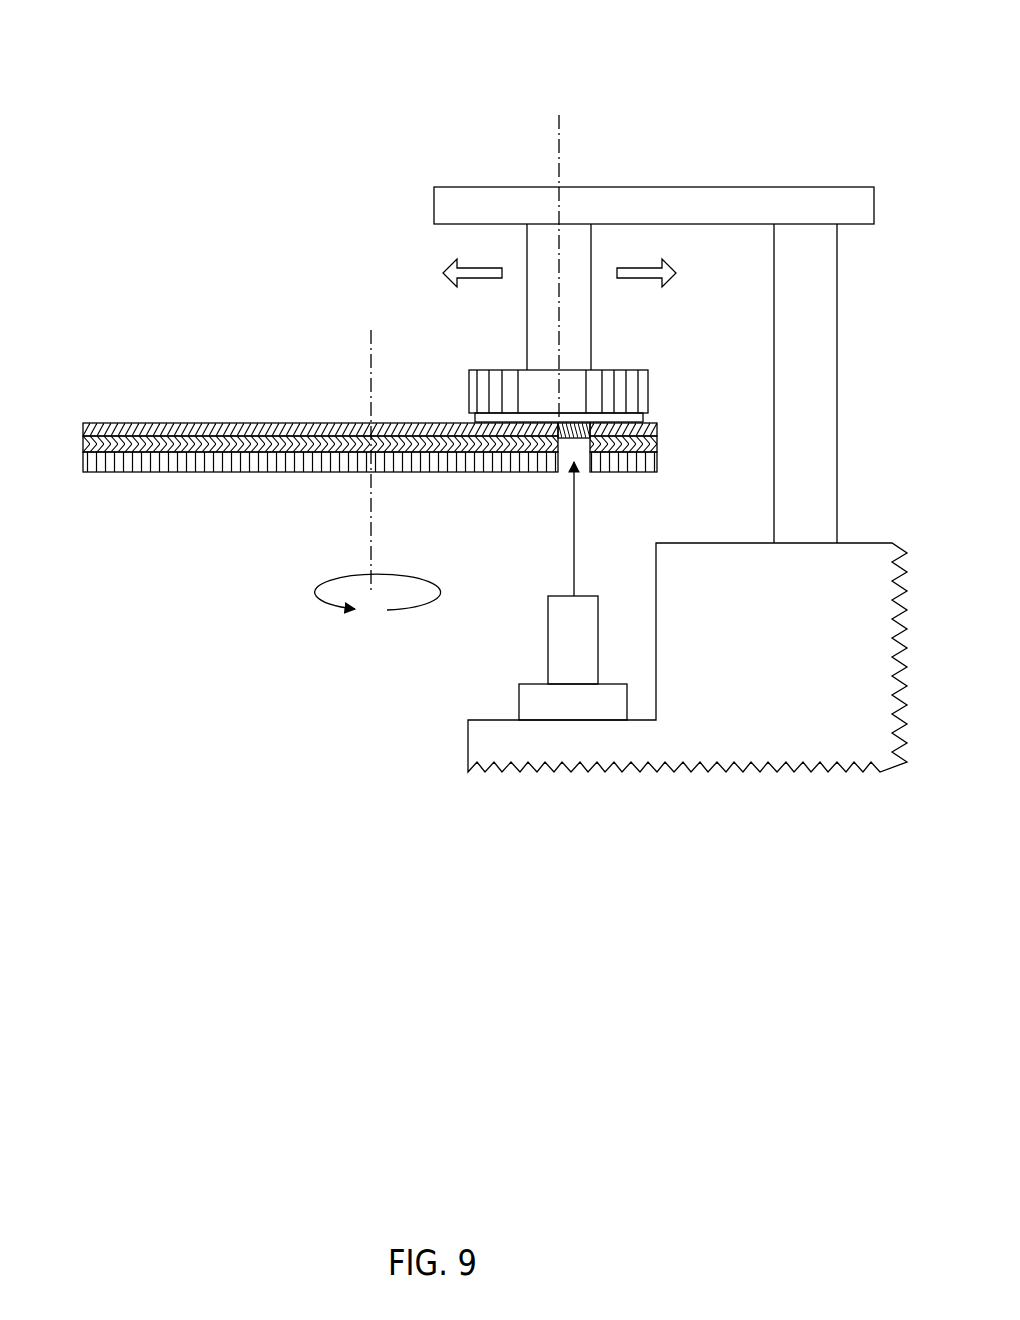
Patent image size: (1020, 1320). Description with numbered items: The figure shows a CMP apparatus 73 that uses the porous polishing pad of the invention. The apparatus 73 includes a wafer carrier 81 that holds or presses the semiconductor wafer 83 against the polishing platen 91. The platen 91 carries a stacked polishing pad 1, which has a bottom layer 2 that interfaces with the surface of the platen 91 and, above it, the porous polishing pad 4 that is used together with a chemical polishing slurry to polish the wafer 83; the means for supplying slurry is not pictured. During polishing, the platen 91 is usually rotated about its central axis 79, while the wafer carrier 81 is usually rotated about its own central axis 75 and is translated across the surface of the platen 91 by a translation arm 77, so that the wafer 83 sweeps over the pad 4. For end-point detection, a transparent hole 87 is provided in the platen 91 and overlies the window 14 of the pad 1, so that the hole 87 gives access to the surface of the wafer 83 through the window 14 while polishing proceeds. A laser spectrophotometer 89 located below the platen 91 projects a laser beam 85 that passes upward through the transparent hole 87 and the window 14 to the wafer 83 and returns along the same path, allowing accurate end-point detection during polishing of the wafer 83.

The CMP apparatus 73 is at (180, 122).
The stacked polishing pad 1 is at (246, 410).
The porous polishing pad 4 is at (83, 426).
The bottom layer 2 is at (83, 449).
The polishing platen 91 is at (133, 472).
The window 14 is at (590, 437).
The central axis 79 is at (380, 380).
The central axis 75 is at (568, 149).
The translation arm 77 is at (829, 207).
The wafer carrier 81 is at (604, 378).
The semiconductor wafer 83 is at (645, 418).
The laser beam 85 is at (583, 550).
The transparent hole 87 is at (566, 480).
The laser spectrophotometer 89 is at (560, 633).